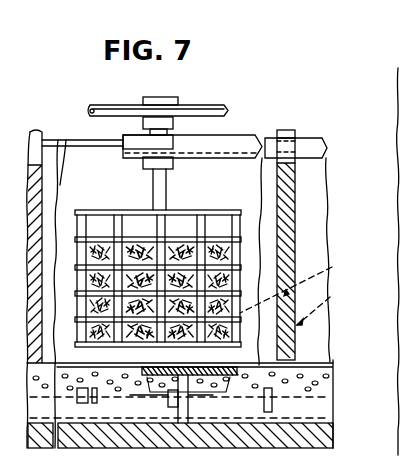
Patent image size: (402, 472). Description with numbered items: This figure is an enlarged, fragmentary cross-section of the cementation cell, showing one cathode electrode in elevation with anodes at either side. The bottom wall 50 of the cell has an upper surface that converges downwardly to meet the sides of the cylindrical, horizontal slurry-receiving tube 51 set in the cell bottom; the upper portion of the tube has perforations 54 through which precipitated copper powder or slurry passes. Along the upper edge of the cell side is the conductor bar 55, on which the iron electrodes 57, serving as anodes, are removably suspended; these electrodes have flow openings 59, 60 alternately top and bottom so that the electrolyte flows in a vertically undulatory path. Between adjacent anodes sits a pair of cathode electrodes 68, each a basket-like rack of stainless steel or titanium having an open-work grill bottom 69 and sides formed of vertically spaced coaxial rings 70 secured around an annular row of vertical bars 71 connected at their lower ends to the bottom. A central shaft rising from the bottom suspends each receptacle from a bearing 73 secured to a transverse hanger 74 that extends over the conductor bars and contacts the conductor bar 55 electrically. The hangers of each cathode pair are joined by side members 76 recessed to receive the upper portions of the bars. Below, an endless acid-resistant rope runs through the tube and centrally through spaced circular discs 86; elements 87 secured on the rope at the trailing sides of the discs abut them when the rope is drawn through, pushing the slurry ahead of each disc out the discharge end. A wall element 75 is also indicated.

The bottom wall 50 is at (102, 440).
The slurry-receiving tube 51 is at (303, 361).
The perforations 54 is at (196, 364).
The conductor bar 55 is at (300, 143).
The iron electrodes 57 is at (294, 237).
The flow openings 59 is at (58, 204).
The flow openings 60 is at (326, 303).
The electrodes 68 is at (230, 209).
The grill bottom 69 is at (298, 285).
The rings 70 is at (188, 240).
The vertical bars 71 is at (123, 218).
The bearing 73 is at (150, 143).
The transverse hanger 74 is at (180, 147).
The chamber wall 75 is at (222, 244).
The side members 76 is at (236, 136).
The circular discs 86 is at (183, 410).
The elements 87 is at (173, 404).